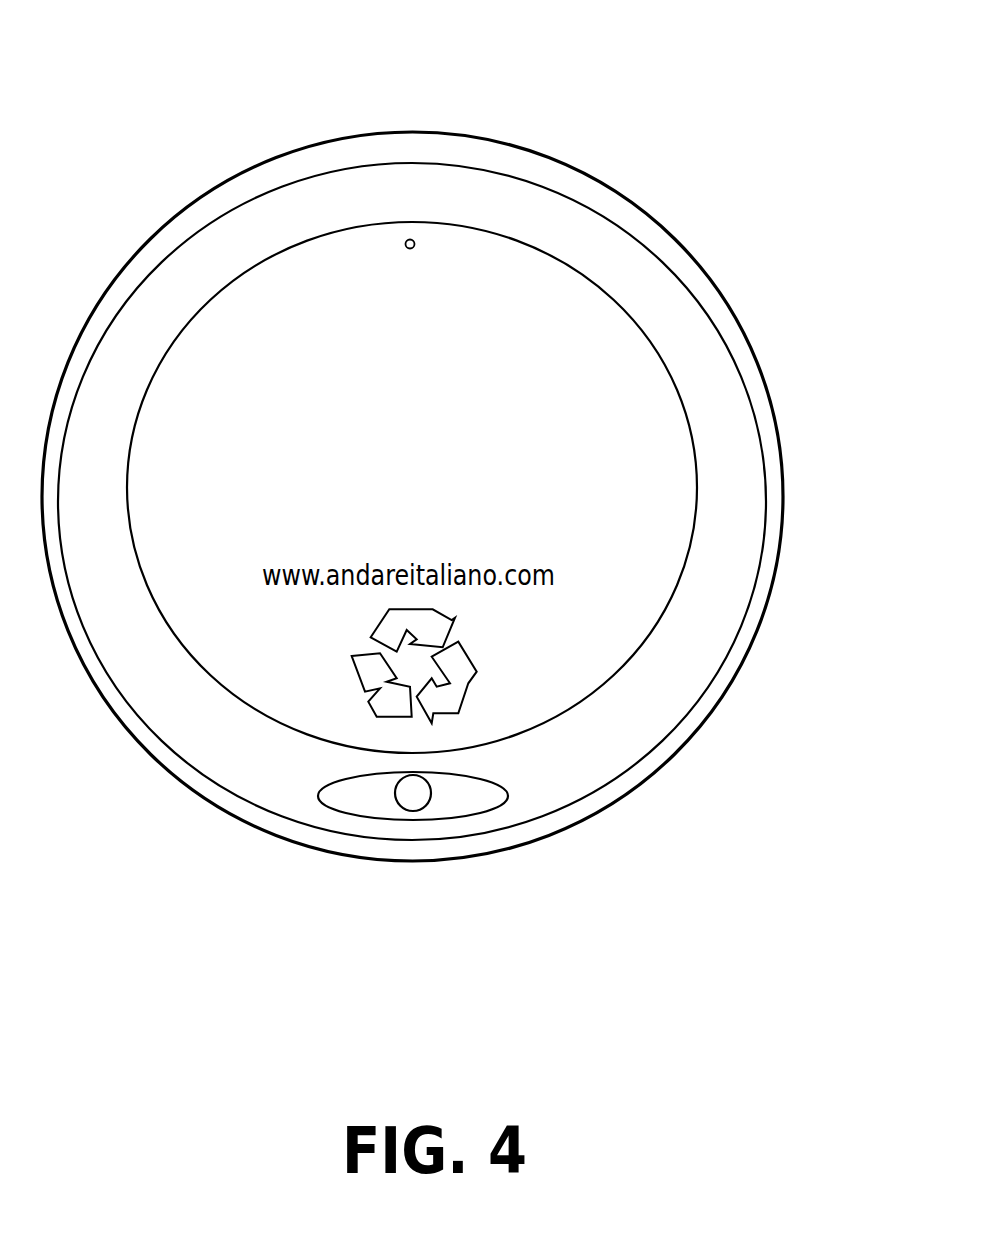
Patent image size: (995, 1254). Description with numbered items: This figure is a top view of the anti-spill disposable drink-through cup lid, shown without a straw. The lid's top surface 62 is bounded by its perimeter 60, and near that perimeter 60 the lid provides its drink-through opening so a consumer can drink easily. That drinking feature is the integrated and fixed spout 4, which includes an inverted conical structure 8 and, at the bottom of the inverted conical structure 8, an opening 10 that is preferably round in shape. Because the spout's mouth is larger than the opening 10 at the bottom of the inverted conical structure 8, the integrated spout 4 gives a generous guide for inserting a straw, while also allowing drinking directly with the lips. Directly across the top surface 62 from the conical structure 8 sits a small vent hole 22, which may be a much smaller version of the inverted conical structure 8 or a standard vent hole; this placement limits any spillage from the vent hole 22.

The integrated spout 4 is at (350, 880).
The inverted conical structure 8 is at (492, 810).
The opening 10 is at (370, 792).
The small vent hole 22 is at (425, 210).
The perimeter 60 is at (672, 758).
The top surface 62 is at (638, 732).